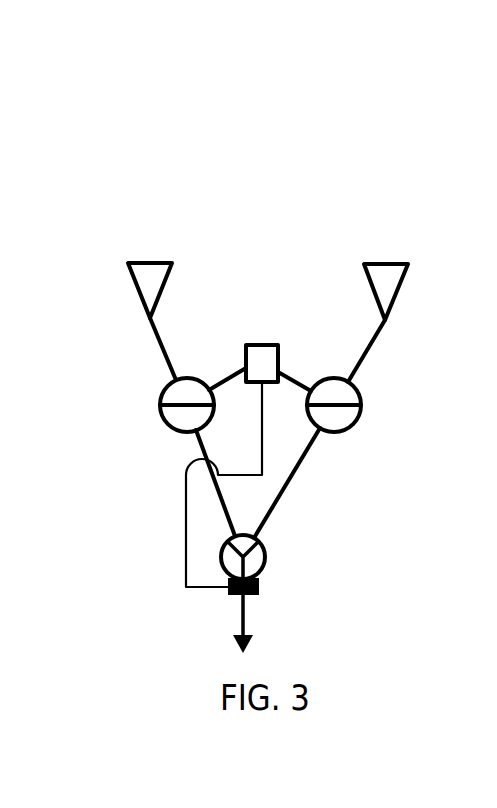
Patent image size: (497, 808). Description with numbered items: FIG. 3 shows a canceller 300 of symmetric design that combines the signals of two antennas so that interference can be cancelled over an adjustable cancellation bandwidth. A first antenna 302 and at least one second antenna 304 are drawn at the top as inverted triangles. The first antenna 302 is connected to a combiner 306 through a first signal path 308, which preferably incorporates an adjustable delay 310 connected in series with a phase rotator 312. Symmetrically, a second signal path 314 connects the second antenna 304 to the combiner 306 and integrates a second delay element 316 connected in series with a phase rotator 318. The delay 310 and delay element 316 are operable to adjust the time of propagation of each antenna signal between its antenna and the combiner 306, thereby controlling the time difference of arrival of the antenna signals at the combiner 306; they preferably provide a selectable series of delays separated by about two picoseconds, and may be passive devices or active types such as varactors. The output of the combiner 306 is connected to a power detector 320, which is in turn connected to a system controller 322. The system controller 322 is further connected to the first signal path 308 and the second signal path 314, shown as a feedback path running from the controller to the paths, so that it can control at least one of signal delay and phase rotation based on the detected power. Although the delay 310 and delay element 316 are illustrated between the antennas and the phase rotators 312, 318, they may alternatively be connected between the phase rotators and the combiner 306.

The canceller 300 is at (265, 162).
The first antenna 302 is at (148, 284).
The second antenna 304 is at (387, 285).
The combiner 306 is at (265, 560).
The first signal path 308 is at (143, 337).
The adjustable delay 310 is at (160, 397).
The phase rotator 312 is at (164, 423).
The second signal path 314 is at (385, 337).
The second delay element 316 is at (361, 395).
The phase rotator 318 is at (361, 412).
The power detector 320 is at (262, 590).
The system controller 322 is at (262, 345).